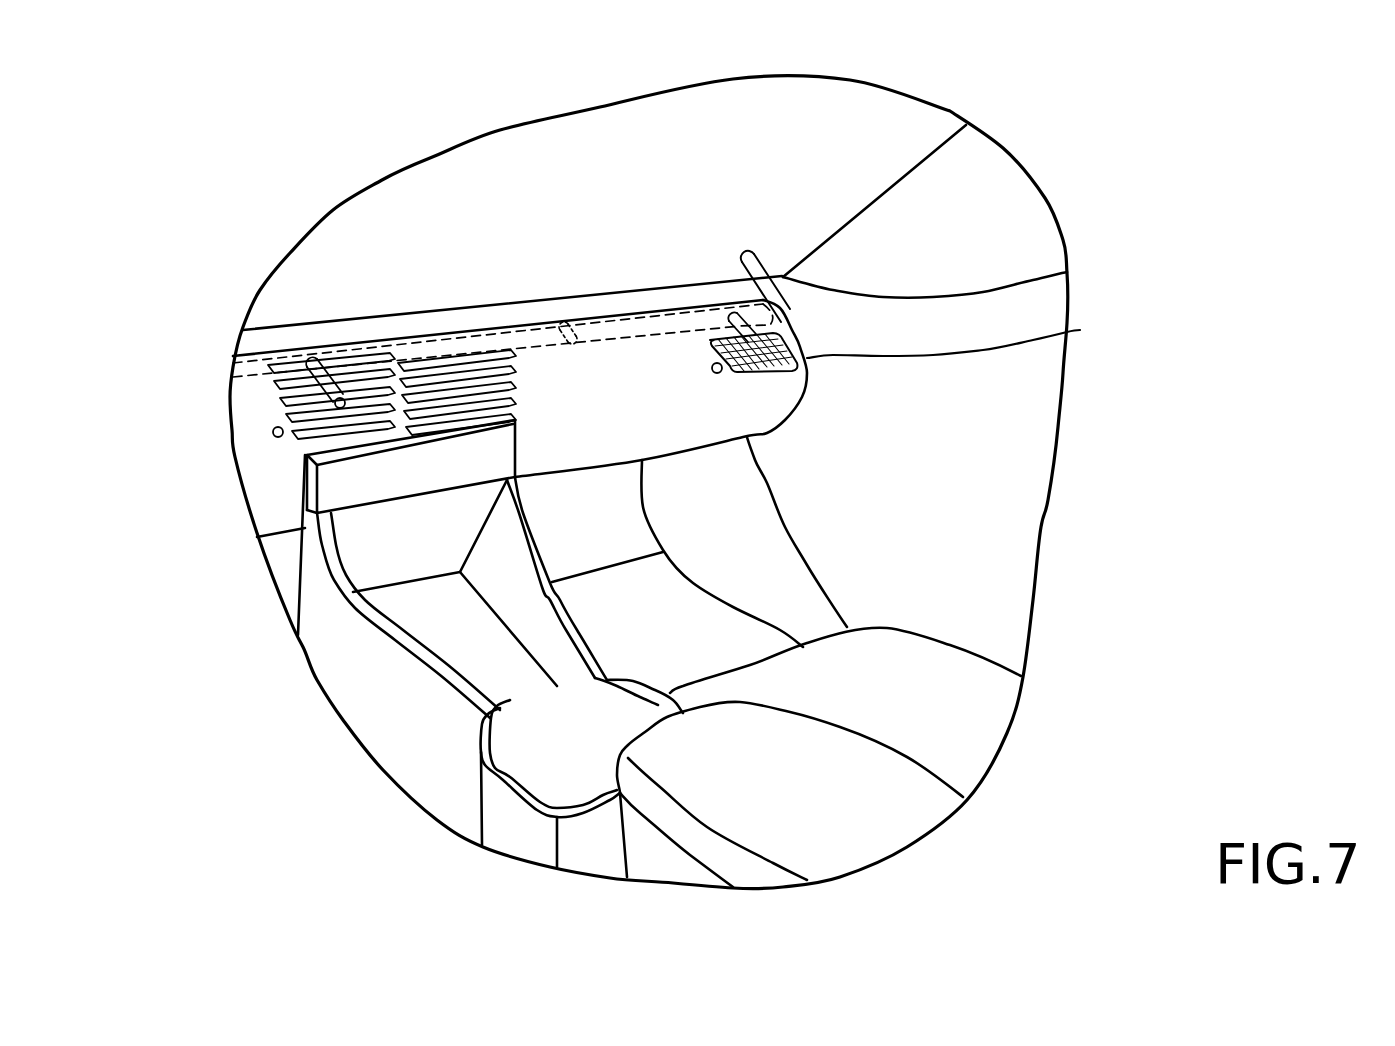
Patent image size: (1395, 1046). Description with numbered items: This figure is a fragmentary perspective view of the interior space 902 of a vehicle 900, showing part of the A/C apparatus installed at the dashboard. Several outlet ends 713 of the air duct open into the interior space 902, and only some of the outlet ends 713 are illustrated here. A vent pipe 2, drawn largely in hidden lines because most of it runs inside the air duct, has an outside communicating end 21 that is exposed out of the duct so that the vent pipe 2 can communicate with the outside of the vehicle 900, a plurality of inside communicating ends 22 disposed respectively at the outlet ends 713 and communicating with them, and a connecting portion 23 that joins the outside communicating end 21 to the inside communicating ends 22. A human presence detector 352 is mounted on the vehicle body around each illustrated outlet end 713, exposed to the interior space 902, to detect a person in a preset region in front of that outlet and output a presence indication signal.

The vent pipe 2 is at (663, 320).
The outside communicating end 21 is at (743, 250).
The inside communicating ends 22 is at (338, 400).
The connecting portion 23 is at (587, 317).
The outlet ends 713 is at (363, 390).
The human presence detector 352 is at (273, 434).
The vehicle 900 is at (1025, 692).
The interior space 902 is at (927, 512).